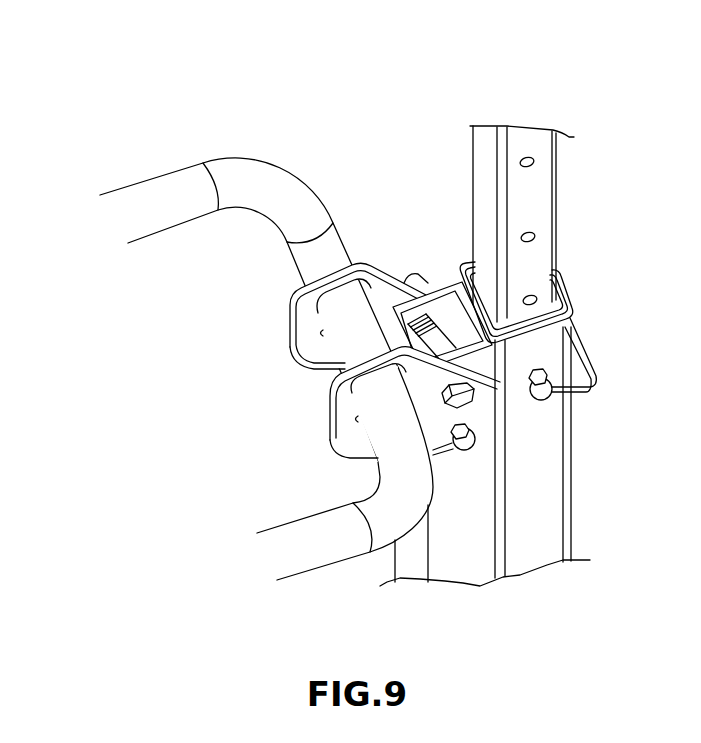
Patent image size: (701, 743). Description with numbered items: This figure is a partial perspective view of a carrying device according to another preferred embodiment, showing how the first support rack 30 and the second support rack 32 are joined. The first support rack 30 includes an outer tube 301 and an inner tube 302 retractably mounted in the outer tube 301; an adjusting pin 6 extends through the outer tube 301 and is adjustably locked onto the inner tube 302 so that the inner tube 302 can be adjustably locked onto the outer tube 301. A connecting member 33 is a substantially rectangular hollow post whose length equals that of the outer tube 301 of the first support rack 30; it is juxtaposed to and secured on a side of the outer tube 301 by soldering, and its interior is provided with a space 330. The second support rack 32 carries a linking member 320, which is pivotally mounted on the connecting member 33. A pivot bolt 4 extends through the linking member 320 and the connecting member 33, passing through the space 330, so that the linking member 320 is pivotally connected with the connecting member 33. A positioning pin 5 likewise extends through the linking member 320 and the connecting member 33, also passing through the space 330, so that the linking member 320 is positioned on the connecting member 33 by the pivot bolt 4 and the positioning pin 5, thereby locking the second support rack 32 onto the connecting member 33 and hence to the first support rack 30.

The first support rack 30 is at (509, 338).
The outer tube 301 is at (532, 547).
The inner tube 302 is at (542, 217).
The second support rack 32 is at (282, 187).
The connecting member 33 is at (442, 290).
The space 330 is at (455, 325).
The linking member 320 is at (343, 403).
The pivot bolt 4 is at (470, 399).
The positioning pin 5 is at (474, 447).
The adjusting pin 6 is at (553, 399).